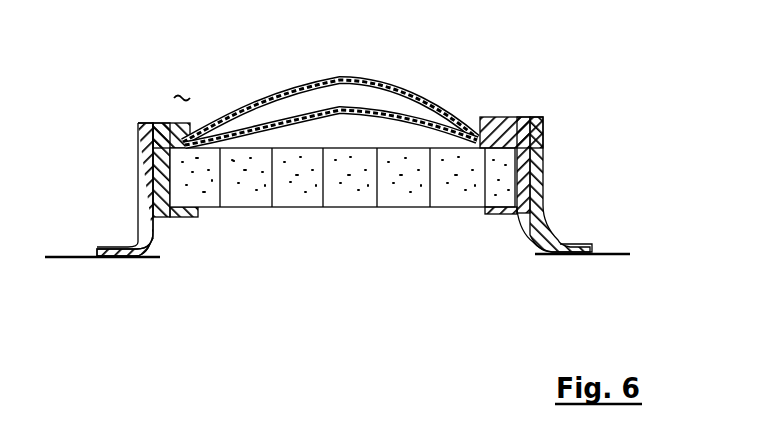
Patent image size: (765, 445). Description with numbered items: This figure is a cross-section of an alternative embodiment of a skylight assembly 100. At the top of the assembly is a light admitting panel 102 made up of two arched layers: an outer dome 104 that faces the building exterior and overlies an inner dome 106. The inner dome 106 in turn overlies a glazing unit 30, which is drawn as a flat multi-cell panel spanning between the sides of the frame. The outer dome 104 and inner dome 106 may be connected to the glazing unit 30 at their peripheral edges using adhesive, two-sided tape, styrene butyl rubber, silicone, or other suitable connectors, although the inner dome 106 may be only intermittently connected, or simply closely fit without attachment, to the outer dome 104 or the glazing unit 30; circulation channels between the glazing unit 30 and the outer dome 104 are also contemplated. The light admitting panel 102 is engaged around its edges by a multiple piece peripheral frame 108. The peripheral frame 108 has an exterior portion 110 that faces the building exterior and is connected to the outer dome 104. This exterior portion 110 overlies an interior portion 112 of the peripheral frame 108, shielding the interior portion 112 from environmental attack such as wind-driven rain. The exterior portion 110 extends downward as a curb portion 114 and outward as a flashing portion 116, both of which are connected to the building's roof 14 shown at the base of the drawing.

The roof 14 is at (80, 257).
The glazing unit 30 is at (240, 208).
The skylight assembly 100 is at (184, 90).
The light admitting panel 102 is at (336, 79).
The outer dome 104 is at (372, 77).
The inner dome 106 is at (310, 110).
The peripheral frame 108 is at (572, 195).
The exterior portion 110 is at (547, 178).
The interior portion 112 is at (505, 215).
The curb portion 114 is at (542, 218).
The flashing portion 116 is at (572, 243).